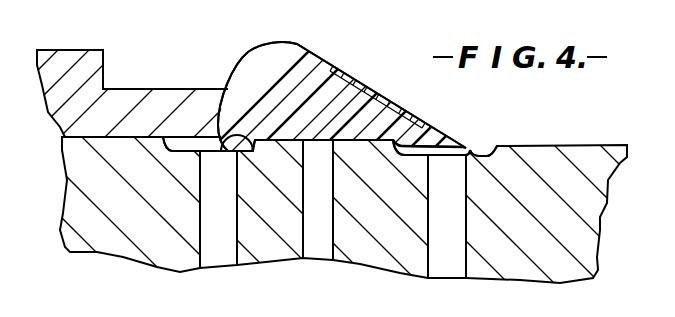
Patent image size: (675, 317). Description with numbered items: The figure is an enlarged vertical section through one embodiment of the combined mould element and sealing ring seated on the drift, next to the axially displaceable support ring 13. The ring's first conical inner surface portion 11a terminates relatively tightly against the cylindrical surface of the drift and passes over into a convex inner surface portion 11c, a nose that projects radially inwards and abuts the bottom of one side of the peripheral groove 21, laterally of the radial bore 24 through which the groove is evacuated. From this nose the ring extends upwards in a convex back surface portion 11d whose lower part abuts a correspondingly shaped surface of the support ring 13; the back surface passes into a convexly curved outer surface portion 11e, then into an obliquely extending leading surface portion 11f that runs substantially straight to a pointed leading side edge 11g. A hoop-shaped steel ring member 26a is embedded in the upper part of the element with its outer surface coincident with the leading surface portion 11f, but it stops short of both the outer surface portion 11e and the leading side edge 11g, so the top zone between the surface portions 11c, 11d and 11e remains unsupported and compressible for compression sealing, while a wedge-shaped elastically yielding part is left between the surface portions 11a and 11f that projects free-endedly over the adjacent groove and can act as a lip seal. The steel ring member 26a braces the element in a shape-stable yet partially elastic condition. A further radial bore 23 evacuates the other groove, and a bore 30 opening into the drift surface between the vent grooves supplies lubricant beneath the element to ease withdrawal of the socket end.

The support ring 13 is at (105, 112).
The peripheral groove 21 is at (171, 151).
The convex back surface portion 11d is at (247, 62).
The convexly curved outer surface portion 11e is at (297, 47).
The hoop-shaped steel ring member 26a is at (333, 78).
The first conical inner surface portion 11a is at (370, 124).
The obliquely extending leading surface portion 11f is at (420, 142).
The pointed leading side edge 11g is at (470, 151).
The convex inner surface portion 11c is at (245, 150).
The radial bore 24 is at (232, 206).
The bore 30 is at (316, 248).
The radial bore 23 is at (463, 205).